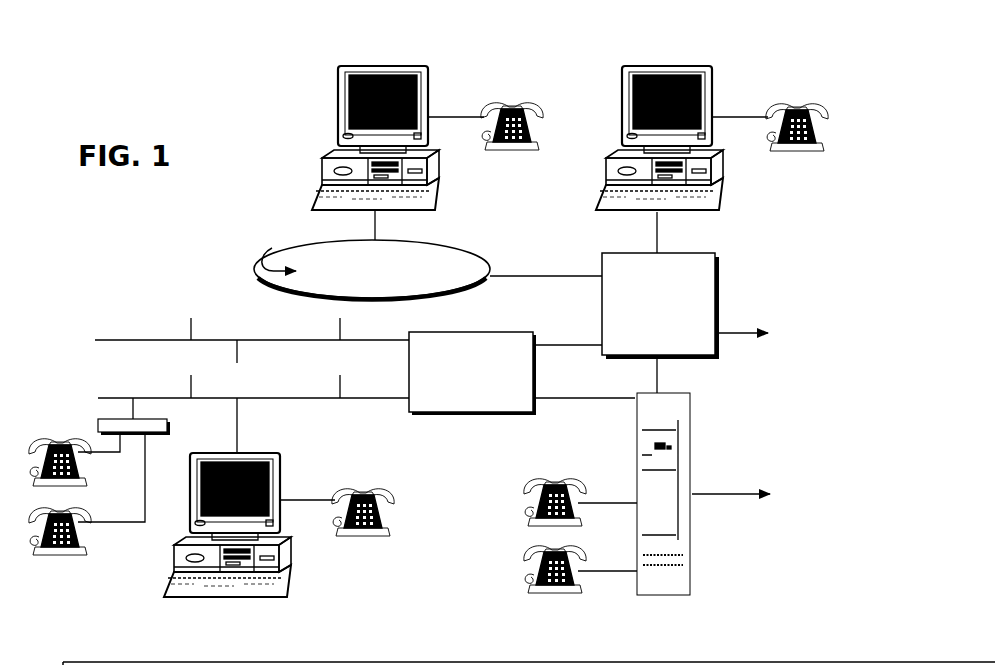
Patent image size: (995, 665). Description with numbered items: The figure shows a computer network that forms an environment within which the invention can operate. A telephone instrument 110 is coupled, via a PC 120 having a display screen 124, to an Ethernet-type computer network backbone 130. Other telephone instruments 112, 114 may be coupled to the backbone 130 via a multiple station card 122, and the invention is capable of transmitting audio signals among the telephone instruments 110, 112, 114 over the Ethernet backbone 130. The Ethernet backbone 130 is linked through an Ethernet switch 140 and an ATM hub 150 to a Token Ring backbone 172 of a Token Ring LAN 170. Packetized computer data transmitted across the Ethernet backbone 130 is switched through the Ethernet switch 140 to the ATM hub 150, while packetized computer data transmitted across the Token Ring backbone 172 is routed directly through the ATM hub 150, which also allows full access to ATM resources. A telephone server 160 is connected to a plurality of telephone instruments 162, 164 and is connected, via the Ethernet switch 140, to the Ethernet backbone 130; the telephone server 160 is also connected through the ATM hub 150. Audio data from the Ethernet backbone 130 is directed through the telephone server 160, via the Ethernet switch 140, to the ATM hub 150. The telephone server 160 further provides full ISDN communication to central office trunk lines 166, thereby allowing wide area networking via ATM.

The telephone instrument 110 is at (518, 90).
The telephone instrument 112 is at (80, 470).
The telephone instrument 114 is at (66, 552).
The PC 120 is at (314, 198).
The multiple station card 122 is at (96, 411).
The display screen 124 is at (378, 60).
The Ethernet-type computer network backbone 130 is at (118, 395).
The Ethernet switch 140 is at (488, 326).
The ATM hub 150 is at (720, 277).
The telephone server 160 is at (697, 553).
The telephone instrument 162 is at (522, 483).
The telephone instrument 164 is at (522, 552).
The central office trunk lines 166 is at (736, 491).
The Token Ring LAN 170 is at (272, 248).
The Token Ring backbone 172 is at (458, 248).